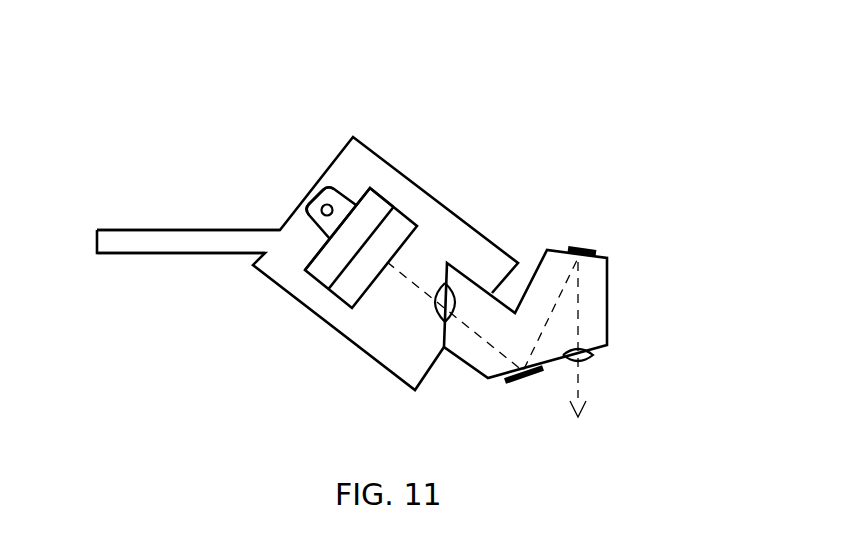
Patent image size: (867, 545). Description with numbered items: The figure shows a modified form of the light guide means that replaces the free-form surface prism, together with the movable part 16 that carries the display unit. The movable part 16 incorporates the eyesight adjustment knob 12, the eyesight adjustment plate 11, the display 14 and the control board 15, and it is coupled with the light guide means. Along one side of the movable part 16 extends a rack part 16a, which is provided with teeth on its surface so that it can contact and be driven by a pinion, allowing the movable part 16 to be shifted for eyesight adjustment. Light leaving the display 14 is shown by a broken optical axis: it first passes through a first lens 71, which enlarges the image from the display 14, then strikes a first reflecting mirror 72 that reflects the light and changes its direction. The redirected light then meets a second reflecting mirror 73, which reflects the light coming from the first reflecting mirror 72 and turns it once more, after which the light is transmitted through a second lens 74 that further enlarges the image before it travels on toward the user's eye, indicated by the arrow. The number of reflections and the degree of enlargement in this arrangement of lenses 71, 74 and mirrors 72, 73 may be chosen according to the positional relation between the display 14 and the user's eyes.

The eyesight adjustment plate 11 is at (332, 186).
The eyesight adjustment knob 12 is at (312, 209).
The display 14 is at (407, 210).
The control board 15 is at (388, 203).
The movable part 16 is at (382, 347).
The rack part 16a is at (192, 232).
The first lens 71 is at (452, 285).
The first reflecting mirror 72 is at (525, 368).
The second reflecting mirror 73 is at (577, 249).
The second lens 74 is at (590, 362).